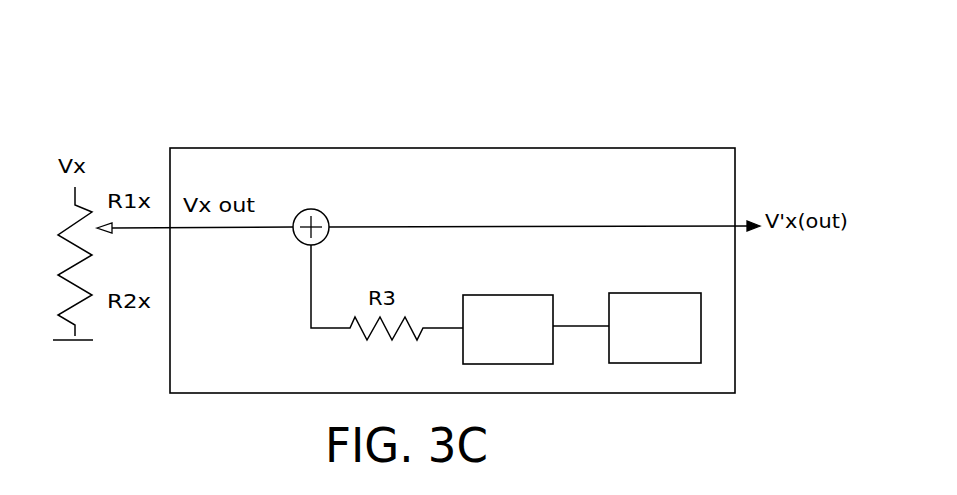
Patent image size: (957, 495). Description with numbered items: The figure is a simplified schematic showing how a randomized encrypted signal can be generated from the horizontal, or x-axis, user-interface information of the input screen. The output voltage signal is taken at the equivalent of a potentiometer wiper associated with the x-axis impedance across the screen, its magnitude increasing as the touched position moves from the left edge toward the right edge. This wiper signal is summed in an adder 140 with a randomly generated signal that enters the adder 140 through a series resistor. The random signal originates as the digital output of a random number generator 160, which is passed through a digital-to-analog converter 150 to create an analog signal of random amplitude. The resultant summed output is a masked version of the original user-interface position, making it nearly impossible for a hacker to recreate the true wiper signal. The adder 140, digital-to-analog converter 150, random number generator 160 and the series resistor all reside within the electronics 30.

The electronics 30 is at (478, 148).
The adder 140 is at (309, 209).
The digital-to-analog converter 150 is at (488, 295).
The random number generator 160 is at (641, 293).